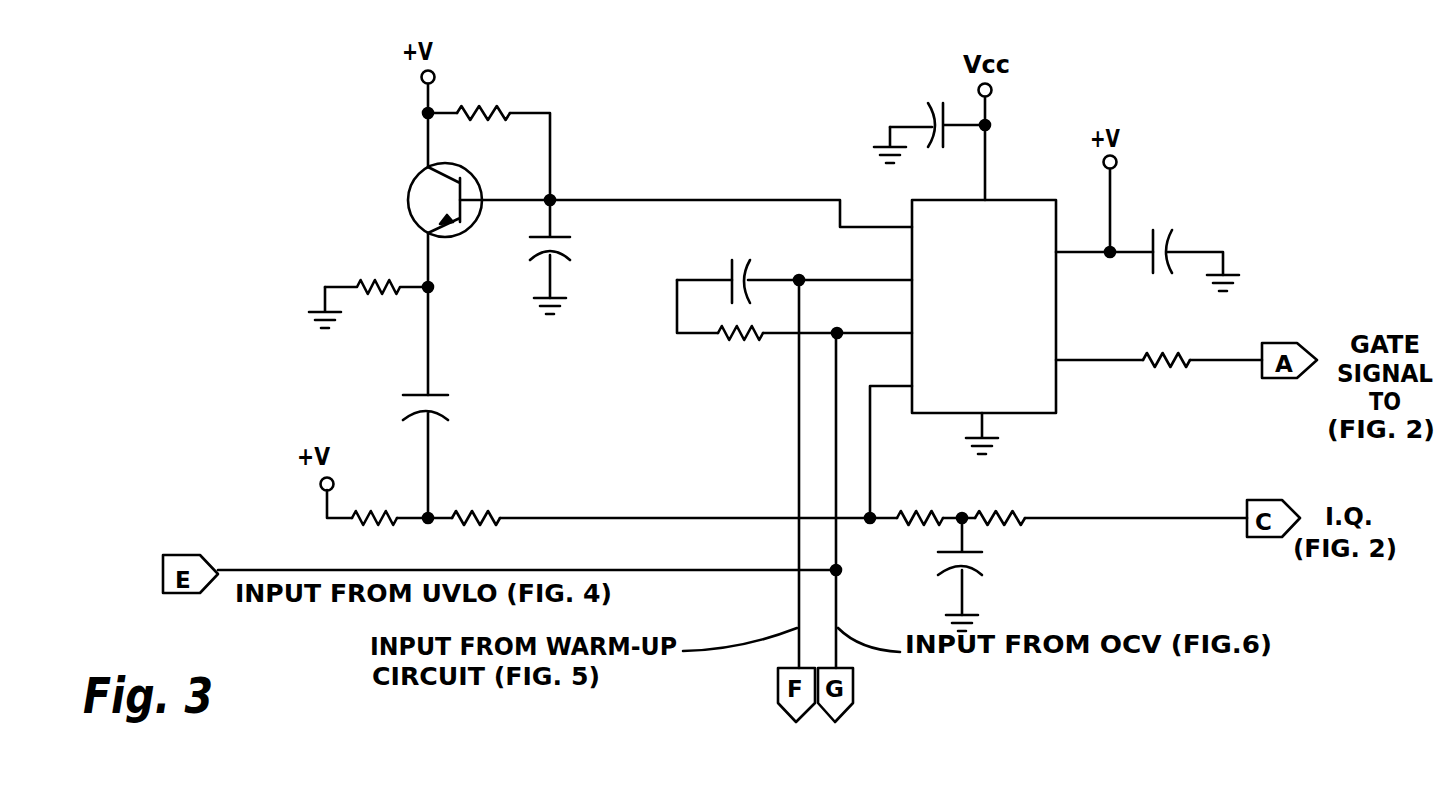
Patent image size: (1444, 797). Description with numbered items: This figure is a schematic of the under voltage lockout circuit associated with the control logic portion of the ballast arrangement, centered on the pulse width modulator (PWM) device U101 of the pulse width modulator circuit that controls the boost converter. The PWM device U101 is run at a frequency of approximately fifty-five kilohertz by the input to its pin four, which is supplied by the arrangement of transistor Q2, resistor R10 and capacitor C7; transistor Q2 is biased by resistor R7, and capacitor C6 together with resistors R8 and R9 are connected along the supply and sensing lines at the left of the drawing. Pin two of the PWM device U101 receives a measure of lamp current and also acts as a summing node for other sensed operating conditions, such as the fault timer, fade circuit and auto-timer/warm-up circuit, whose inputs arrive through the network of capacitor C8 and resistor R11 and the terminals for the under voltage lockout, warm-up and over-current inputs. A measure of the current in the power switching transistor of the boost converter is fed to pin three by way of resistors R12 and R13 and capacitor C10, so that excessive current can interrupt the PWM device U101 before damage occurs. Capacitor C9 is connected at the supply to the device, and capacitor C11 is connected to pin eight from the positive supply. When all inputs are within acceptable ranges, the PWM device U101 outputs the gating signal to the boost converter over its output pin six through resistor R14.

The transistor Q2 is at (407, 198).
The resistor R7 is at (378, 283).
The resistor R8 is at (380, 512).
The resistor R9 is at (485, 515).
The resistor R10 is at (488, 106).
The resistor R11 is at (743, 338).
The resistor R12 is at (923, 513).
The resistor R13 is at (1015, 513).
The resistor R14 is at (1168, 365).
The capacitor C6 is at (447, 403).
The capacitor C7 is at (571, 240).
The capacitor C8 is at (728, 262).
The capacitor C9 is at (928, 102).
The capacitor C10 is at (980, 560).
The capacitor C11 is at (1163, 225).
The pulse width modulator device U101 is at (984, 326).